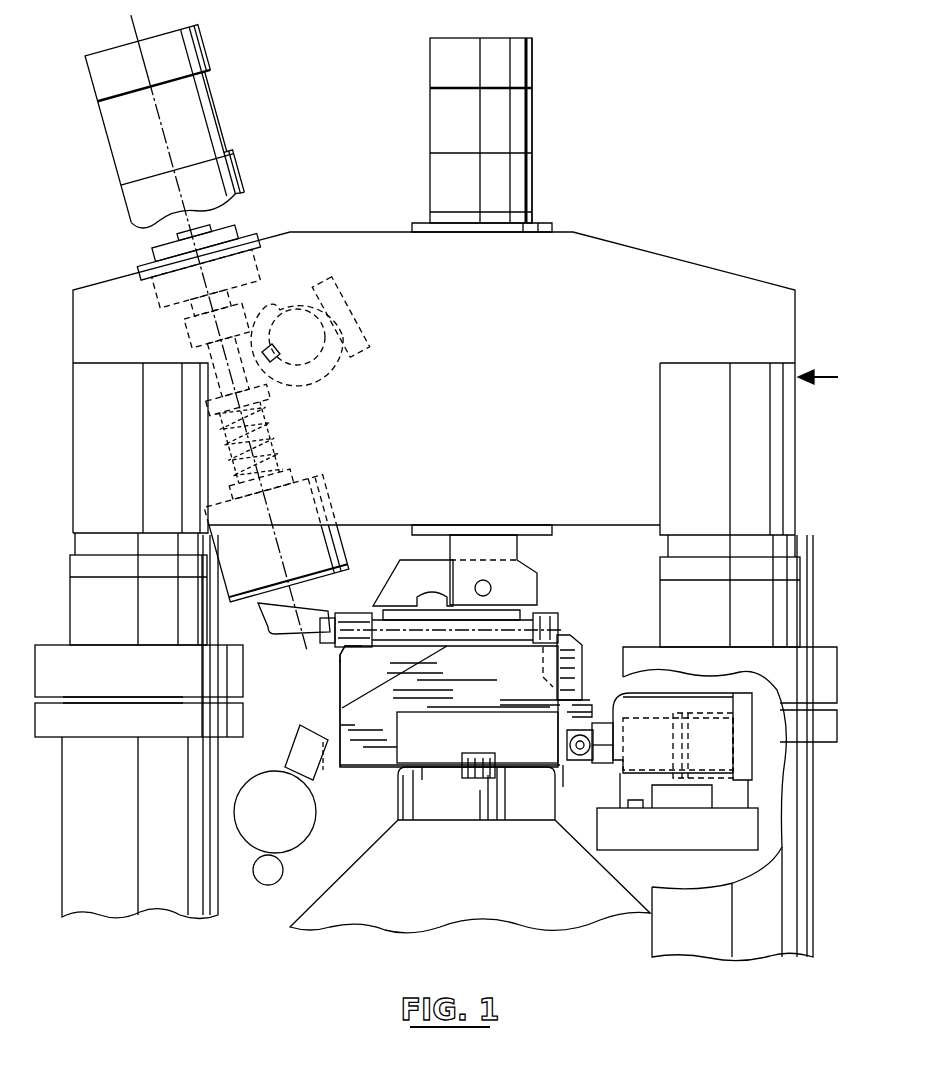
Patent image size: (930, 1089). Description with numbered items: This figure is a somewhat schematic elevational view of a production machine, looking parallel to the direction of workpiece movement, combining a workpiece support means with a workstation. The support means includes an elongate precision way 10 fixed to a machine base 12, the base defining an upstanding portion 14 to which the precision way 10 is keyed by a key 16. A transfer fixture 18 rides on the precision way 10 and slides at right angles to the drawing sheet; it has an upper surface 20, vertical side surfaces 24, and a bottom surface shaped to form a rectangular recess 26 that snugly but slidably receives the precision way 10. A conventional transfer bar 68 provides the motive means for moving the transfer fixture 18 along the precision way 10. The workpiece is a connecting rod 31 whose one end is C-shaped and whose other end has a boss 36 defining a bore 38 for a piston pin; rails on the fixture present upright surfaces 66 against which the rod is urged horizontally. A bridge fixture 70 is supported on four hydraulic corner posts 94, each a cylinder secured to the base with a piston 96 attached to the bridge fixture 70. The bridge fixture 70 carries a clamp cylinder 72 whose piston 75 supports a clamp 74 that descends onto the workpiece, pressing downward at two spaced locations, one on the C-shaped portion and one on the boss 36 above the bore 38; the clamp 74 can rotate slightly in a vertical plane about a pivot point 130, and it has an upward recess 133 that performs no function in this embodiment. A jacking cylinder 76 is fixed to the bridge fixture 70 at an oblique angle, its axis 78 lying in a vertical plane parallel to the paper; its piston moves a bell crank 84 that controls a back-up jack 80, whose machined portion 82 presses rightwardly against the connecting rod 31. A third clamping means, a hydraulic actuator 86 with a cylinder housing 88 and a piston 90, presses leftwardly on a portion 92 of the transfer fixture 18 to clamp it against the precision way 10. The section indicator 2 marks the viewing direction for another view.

The section line 2 is at (818, 361).
The precision way 10 is at (415, 739).
The machine base 12 is at (398, 898).
The upstanding portion 14 is at (415, 802).
The key 16 is at (487, 781).
The transfer fixture 18 is at (452, 684).
The upper surface 20 is at (417, 645).
The vertical side surfaces 24 is at (338, 700).
The rectangular recess 26 is at (517, 714).
The connecting rod 31 is at (560, 624).
The boss 36 is at (350, 652).
The bore 38 is at (362, 620).
The upright surfaces 66 is at (550, 662).
The transfer bar 68 is at (300, 833).
The bridge fixture 70 is at (708, 287).
The clamp cylinder 72 is at (518, 137).
The clamp 74 is at (528, 566).
The piston 75 is at (460, 550).
The jacking cylinder 76 is at (208, 124).
The axis 78 is at (138, 28).
The back-up jack 80 is at (275, 627).
The portion 82 is at (312, 637).
The bell crank 84 is at (305, 290).
The hydraulic actuator 86 is at (706, 738).
The cylinder housing 88 is at (640, 700).
The piston 90 is at (605, 730).
The portion 92 is at (565, 770).
The hydraulic corner posts 94 is at (78, 802).
The piston 96 is at (668, 590).
The pivot point 130 is at (476, 584).
The upward recess 133 is at (418, 663).